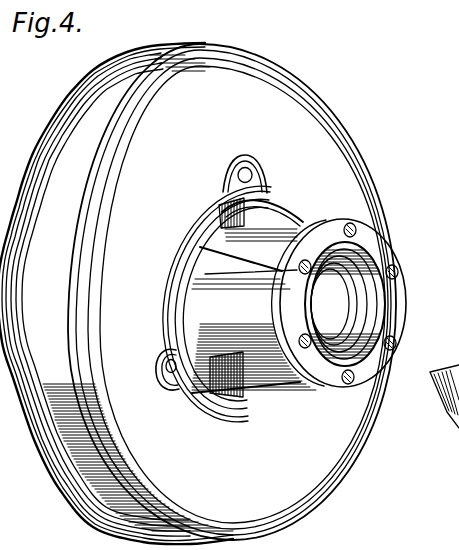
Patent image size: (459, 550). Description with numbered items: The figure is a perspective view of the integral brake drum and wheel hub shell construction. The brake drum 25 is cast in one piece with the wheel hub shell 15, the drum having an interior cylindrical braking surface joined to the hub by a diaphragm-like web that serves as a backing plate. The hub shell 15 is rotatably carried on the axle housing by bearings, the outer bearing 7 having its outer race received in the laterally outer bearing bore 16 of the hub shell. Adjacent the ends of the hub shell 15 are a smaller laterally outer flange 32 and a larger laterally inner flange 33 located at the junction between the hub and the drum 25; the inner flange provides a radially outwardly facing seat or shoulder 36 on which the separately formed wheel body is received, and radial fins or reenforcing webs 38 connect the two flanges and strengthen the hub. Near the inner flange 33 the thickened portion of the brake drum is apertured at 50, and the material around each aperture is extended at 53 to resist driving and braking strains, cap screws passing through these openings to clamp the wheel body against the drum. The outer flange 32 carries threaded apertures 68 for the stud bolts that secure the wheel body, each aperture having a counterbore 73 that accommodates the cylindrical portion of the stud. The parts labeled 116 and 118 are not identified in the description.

The brake drum 25 is at (263, 63).
The hub flange ring 116 is at (197, 217).
The flange bead 118 is at (210, 195).
The seat or shoulder 36 is at (193, 247).
The radial fins or reenforcing webs 38 is at (228, 268).
The extended thickened section 53 is at (247, 154).
The aperture 50 is at (253, 174).
The inner flange 33 is at (188, 296).
The wheel hub shell 15 is at (266, 364).
The flange 32 is at (334, 224).
The counterbore 73 is at (358, 232).
The threaded apertures 68 is at (398, 272).
The outer bearing bore 16 is at (356, 303).
The outer bearing 7 is at (340, 319).